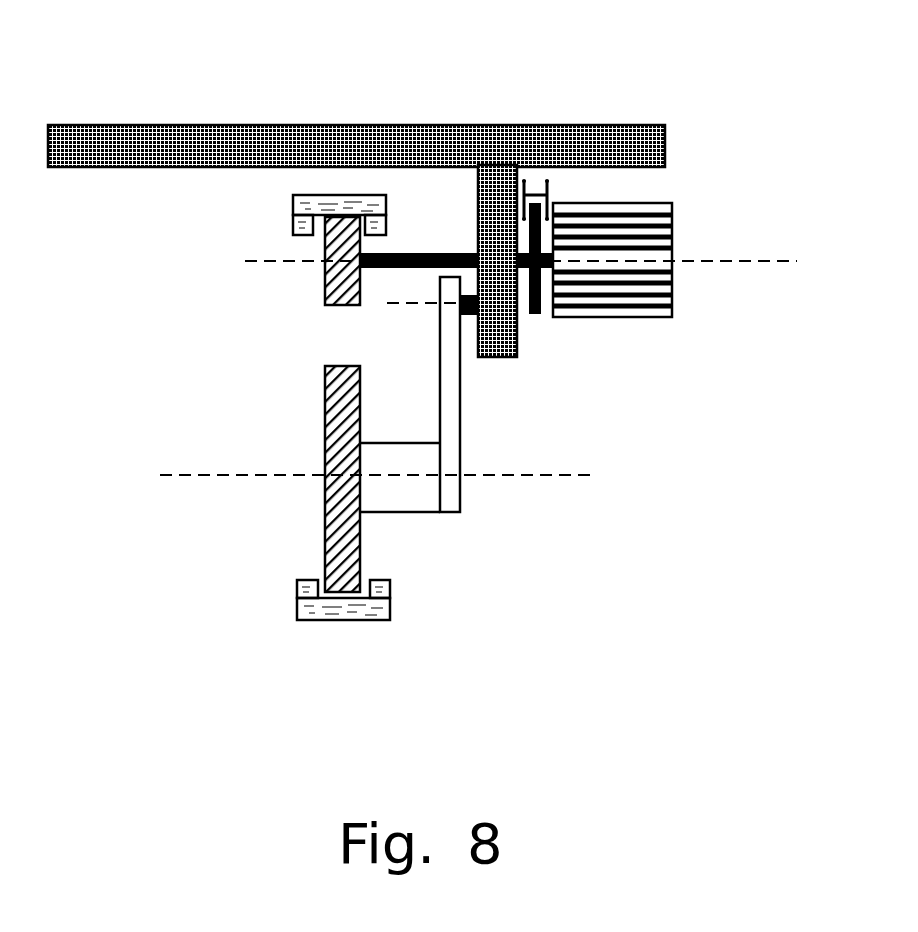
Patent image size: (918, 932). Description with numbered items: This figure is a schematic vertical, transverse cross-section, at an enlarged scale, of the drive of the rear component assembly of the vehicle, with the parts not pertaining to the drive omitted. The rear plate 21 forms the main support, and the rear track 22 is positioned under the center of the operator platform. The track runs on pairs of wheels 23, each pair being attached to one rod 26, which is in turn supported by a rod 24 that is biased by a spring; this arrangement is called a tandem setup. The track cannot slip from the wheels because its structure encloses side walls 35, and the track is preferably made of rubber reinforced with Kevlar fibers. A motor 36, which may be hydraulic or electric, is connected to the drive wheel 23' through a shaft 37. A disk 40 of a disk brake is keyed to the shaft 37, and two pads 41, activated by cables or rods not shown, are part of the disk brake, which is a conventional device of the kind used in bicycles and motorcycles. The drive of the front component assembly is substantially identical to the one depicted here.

The rear plate 21 is at (358, 127).
The rear track 22 is at (297, 205).
The wheels 23 is at (303, 479).
The drive wheel 23' is at (271, 168).
The rod 24 is at (452, 420).
The rod 26 is at (410, 475).
The side walls 35 is at (306, 237).
The motor 36 is at (663, 228).
The shaft 37 is at (428, 250).
The disk 40 is at (535, 315).
The pads 41 is at (535, 194).